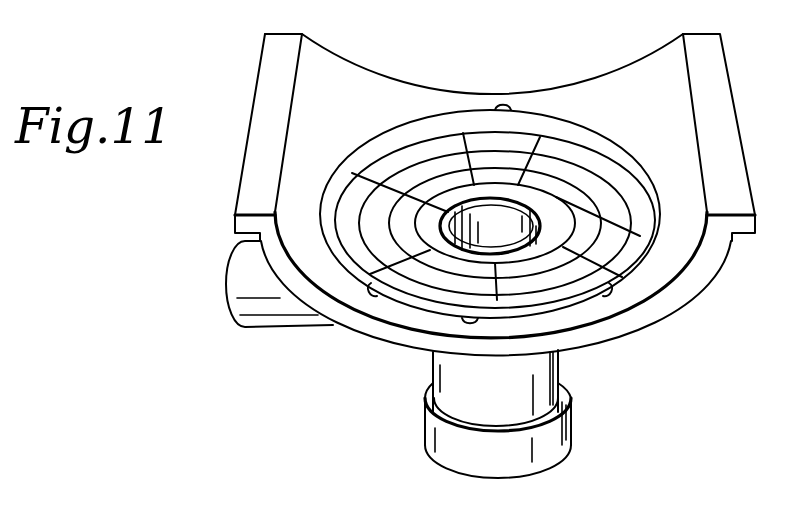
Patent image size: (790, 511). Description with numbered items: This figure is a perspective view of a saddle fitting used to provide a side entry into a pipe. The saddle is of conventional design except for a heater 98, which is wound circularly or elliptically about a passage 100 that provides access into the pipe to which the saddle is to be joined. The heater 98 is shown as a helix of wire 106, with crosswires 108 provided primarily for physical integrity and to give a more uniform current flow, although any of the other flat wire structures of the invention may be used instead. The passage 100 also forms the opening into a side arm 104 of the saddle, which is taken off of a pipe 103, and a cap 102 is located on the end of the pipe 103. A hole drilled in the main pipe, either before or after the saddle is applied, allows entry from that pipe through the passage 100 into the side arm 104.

The heater 98 is at (557, 280).
The passage 100 is at (513, 213).
The cap 102 is at (571, 428).
The pipe 103 is at (438, 377).
The side arm 104 is at (292, 318).
The wire 106 is at (600, 217).
The crosswires 108 is at (440, 145).